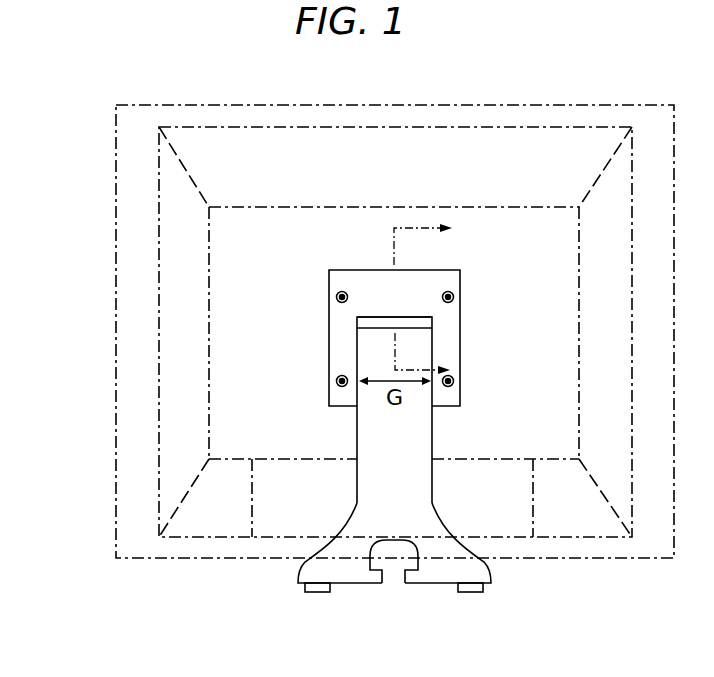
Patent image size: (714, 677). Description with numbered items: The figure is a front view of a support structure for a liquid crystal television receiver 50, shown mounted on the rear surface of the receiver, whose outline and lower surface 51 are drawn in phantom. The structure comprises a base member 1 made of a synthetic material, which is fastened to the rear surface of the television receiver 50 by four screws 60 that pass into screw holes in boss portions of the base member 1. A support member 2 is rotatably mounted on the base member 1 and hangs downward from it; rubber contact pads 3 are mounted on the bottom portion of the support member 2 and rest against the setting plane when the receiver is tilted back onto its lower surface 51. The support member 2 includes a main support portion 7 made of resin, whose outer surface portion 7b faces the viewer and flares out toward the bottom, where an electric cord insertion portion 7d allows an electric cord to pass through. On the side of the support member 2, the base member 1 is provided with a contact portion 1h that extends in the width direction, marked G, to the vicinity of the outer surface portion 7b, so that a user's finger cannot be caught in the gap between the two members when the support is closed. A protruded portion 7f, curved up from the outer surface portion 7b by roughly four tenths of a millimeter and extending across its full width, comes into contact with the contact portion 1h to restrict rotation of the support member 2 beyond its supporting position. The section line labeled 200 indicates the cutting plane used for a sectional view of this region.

The base member 1 is at (365, 283).
The contact portion 1h is at (358, 317).
The support member 2 is at (407, 476).
The contact pads 3 is at (316, 592).
The main support portion 7 is at (391, 442).
The outer surface portion 7b is at (390, 487).
The electric cord insertion portion 7d is at (396, 542).
The protruded portion 7f is at (398, 323).
The liquid crystal television receiver 50 is at (116, 238).
The lower surface 51 is at (215, 558).
The screws 60 is at (338, 291).
The section line 200 is at (450, 296).